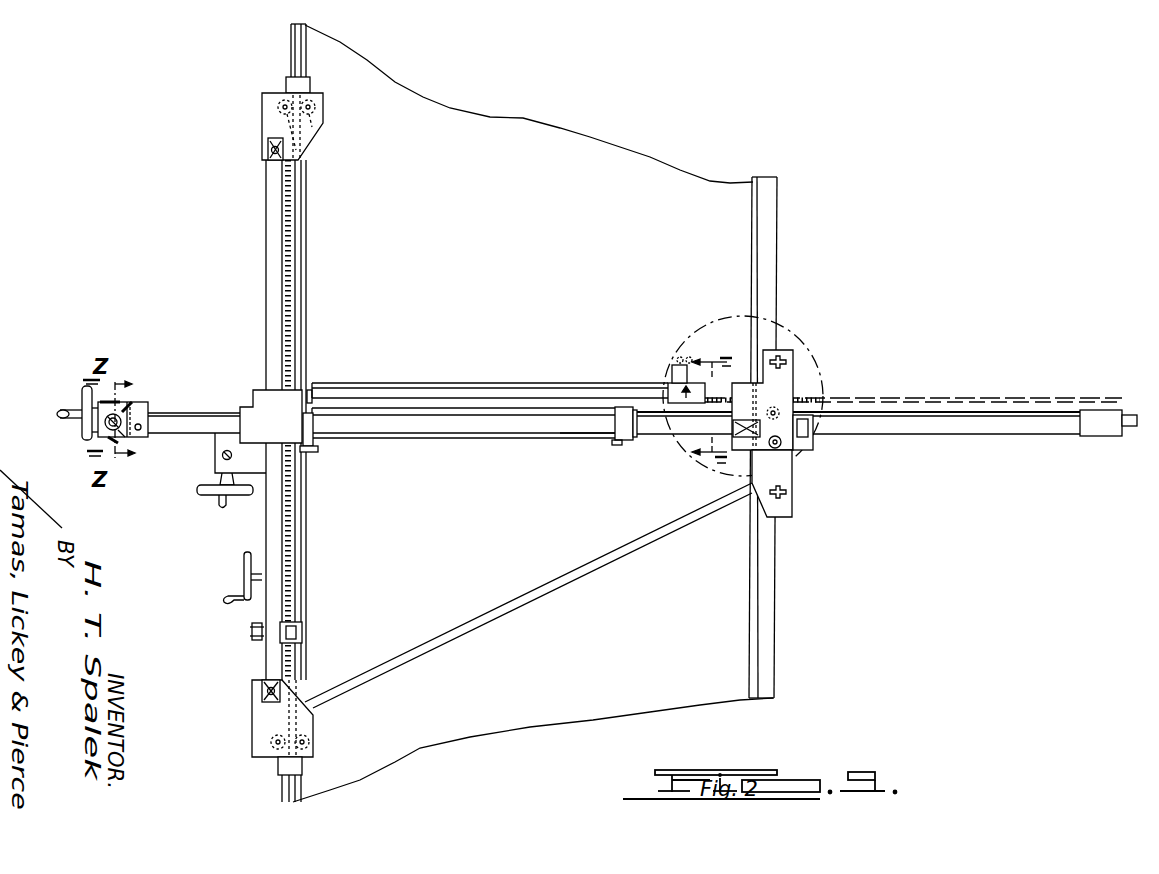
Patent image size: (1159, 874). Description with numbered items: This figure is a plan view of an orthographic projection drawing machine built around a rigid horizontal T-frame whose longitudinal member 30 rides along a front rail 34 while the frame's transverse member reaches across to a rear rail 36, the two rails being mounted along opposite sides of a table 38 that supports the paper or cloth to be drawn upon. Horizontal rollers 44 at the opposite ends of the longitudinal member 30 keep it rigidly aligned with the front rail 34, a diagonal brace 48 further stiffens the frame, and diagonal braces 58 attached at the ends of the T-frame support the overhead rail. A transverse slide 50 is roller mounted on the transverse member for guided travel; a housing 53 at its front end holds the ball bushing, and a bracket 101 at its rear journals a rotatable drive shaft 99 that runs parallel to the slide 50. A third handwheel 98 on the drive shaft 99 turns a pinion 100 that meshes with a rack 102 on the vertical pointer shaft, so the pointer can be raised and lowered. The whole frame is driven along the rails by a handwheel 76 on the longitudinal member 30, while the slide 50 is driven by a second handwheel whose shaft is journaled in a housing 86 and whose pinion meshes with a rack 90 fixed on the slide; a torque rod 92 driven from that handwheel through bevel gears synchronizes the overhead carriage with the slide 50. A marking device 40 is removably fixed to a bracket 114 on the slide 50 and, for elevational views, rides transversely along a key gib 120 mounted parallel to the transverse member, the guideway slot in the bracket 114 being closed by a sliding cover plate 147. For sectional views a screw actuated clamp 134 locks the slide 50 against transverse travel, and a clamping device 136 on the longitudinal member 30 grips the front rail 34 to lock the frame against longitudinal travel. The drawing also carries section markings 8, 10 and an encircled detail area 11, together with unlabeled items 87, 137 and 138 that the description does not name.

The longitudinal member 30 is at (270, 241).
The front rail 34 is at (293, 577).
The rear rail 36 is at (777, 282).
The table 38 is at (537, 532).
The marking device 40 is at (667, 368).
The horizontal rollers 44 is at (312, 132).
The diagonal brace 48 is at (612, 550).
The transverse slide 50 is at (173, 422).
The housing 53 is at (117, 415).
The diagonal braces 58 is at (270, 160).
The handwheel 76 is at (244, 570).
The housing 86 is at (217, 463).
The handle 87 is at (215, 505).
The rack 90 is at (557, 440).
The torque rod 92 is at (224, 452).
The third handwheel 98 is at (82, 400).
The drive shaft 99 is at (368, 410).
The pinion 100 is at (138, 403).
The bracket 101 is at (1107, 423).
The rack 102 is at (102, 435).
The bracket 114 is at (618, 446).
The key gib 120 is at (487, 385).
The screw actuated clamp 134 is at (326, 463).
The clamping device 136 is at (250, 640).
The carriage block 137 is at (293, 400).
The clamp bracket 138 is at (303, 633).
The cover plate 147 is at (634, 444).
The section line 8- 8 is at (740, 376).
The section line 10- 10 is at (692, 404).
The detail circle 11 is at (825, 362).